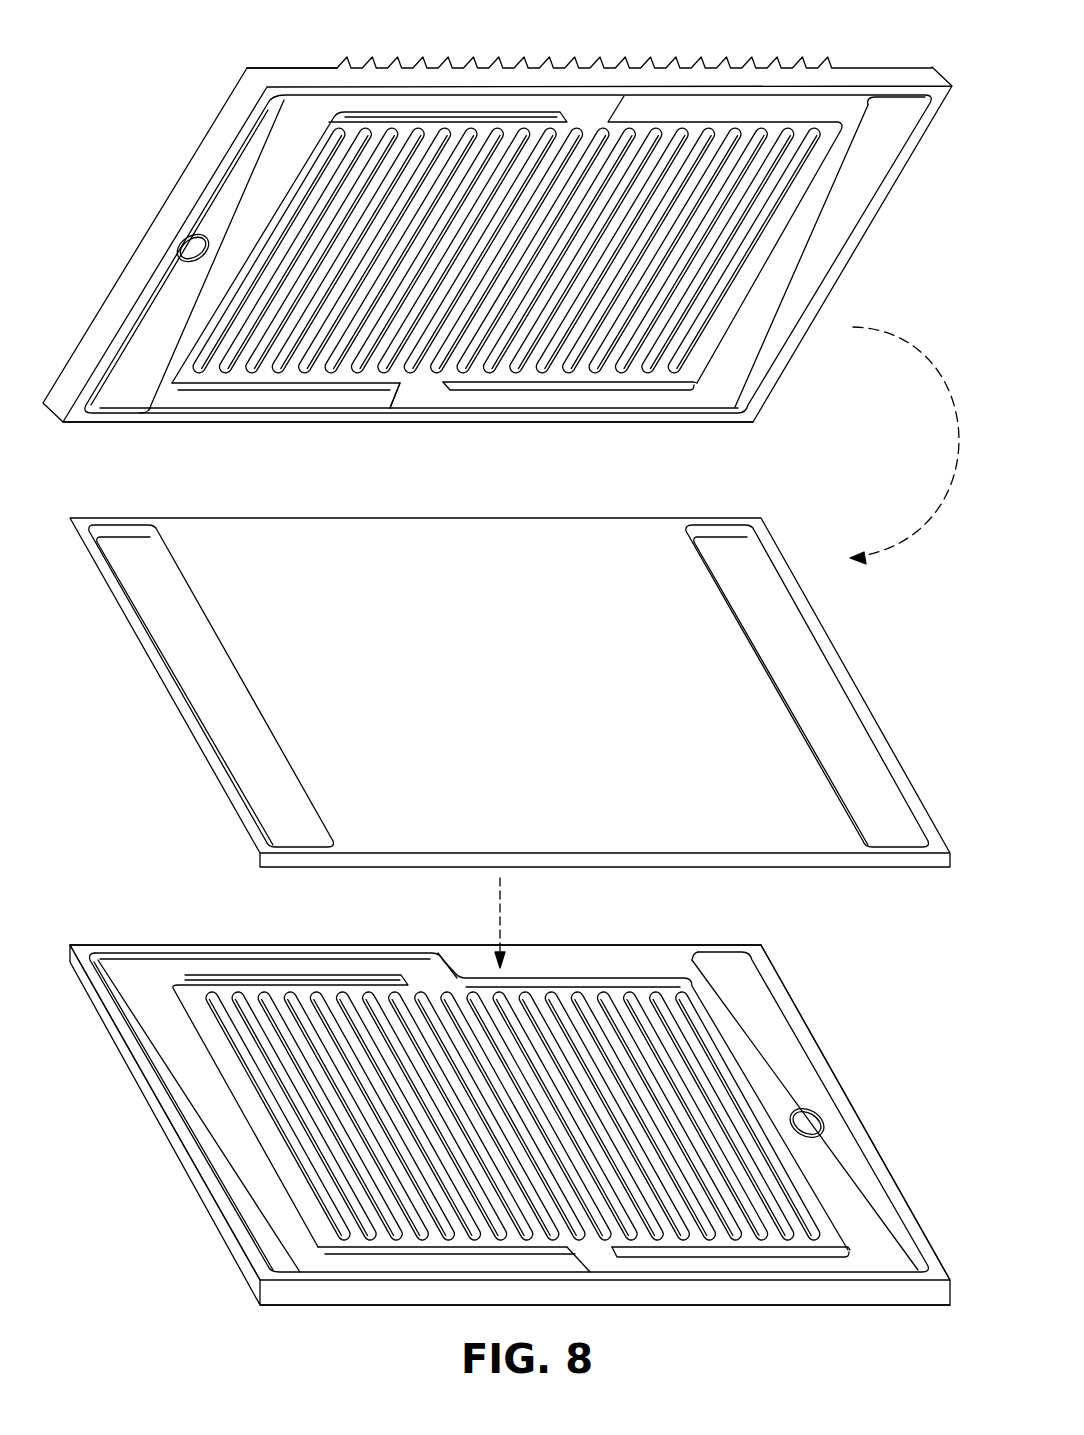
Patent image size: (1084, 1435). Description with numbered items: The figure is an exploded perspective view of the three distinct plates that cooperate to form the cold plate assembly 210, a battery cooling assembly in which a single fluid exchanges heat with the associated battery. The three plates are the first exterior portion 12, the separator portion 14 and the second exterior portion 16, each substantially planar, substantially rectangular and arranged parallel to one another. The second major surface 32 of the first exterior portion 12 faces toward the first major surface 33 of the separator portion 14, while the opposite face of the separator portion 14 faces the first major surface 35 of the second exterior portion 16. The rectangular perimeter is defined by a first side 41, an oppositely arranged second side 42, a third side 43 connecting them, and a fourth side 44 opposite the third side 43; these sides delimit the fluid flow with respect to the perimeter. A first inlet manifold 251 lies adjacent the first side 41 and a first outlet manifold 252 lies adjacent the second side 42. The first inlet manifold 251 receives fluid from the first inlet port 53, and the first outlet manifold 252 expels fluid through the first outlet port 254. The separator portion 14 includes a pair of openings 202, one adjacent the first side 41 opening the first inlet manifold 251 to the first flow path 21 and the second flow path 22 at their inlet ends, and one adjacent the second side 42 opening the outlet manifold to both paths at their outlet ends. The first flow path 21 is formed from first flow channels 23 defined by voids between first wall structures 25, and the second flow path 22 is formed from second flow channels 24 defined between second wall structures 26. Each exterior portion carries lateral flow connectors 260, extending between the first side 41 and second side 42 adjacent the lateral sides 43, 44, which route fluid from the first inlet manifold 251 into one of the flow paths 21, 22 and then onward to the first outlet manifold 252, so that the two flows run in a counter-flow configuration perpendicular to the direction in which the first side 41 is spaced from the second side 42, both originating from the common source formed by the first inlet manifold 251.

The cold plate assembly 210 is at (150, 160).
The first exterior portion 12 is at (497, 265).
The second major surface 32 is at (240, 404).
The separator portion 14 is at (510, 667).
The first major surface 33 is at (420, 540).
The second exterior portion 16 is at (510, 1099).
The first major surface 35 is at (625, 966).
The first flow path 21 is at (461, 425).
The first flow channels 23 is at (430, 389).
The second flow path 22 is at (381, 944).
The second flow channels 24 is at (426, 986).
The first wall structures 25 is at (662, 374).
The second wall structures 26 is at (265, 1000).
The lateral flow connectors 260 is at (513, 105).
The openings 202 is at (220, 668).
The first inlet manifold 251 is at (130, 368).
The first outlet manifold 252 is at (860, 172).
The first outlet port 254 is at (830, 1128).
The first inlet port 53 is at (183, 246).
The first side 41 is at (160, 1110).
The second side 42 is at (810, 1030).
The third side 43 is at (142, 423).
The fourth side 44 is at (322, 74).